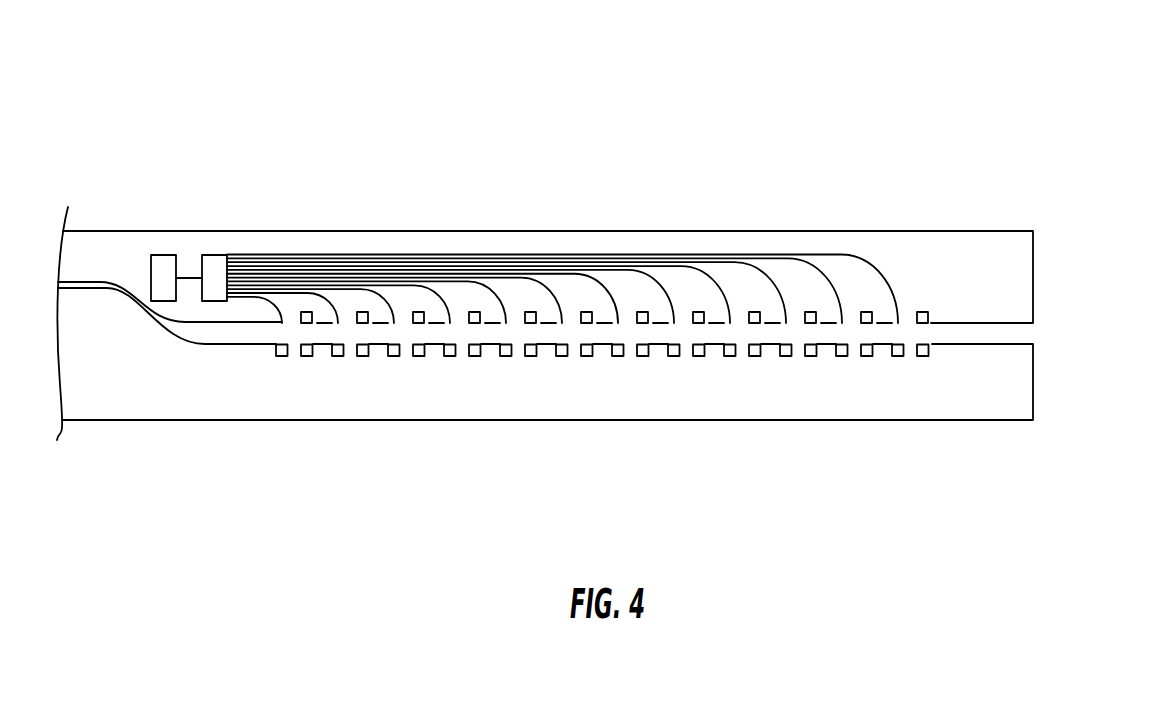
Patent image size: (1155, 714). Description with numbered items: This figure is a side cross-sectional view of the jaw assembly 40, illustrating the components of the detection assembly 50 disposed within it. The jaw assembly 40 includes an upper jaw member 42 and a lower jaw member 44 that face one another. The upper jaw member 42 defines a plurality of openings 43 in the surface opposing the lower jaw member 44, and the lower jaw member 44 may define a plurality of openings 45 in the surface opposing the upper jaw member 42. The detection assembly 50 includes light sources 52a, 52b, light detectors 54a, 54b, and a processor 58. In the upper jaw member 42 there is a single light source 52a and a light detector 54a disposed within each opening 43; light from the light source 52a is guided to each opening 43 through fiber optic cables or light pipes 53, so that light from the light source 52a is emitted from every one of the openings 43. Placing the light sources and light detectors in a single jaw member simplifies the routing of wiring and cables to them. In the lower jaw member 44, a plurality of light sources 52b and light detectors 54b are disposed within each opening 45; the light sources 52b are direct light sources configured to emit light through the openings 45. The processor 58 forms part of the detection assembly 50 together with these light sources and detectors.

The jaw assembly 40 is at (247, 117).
The upper jaw member 42 is at (1033, 282).
The openings 43 is at (788, 323).
The lower jaw member 44 is at (1033, 402).
The openings 45 is at (796, 344).
The detection assembly 50 is at (218, 242).
The light source 52a is at (215, 262).
The light sources 52b is at (787, 357).
The fiber optic cables or light pipes 53 is at (280, 255).
The light detector 54a is at (807, 312).
The light detectors 54b is at (810, 357).
The processor 58 is at (163, 263).